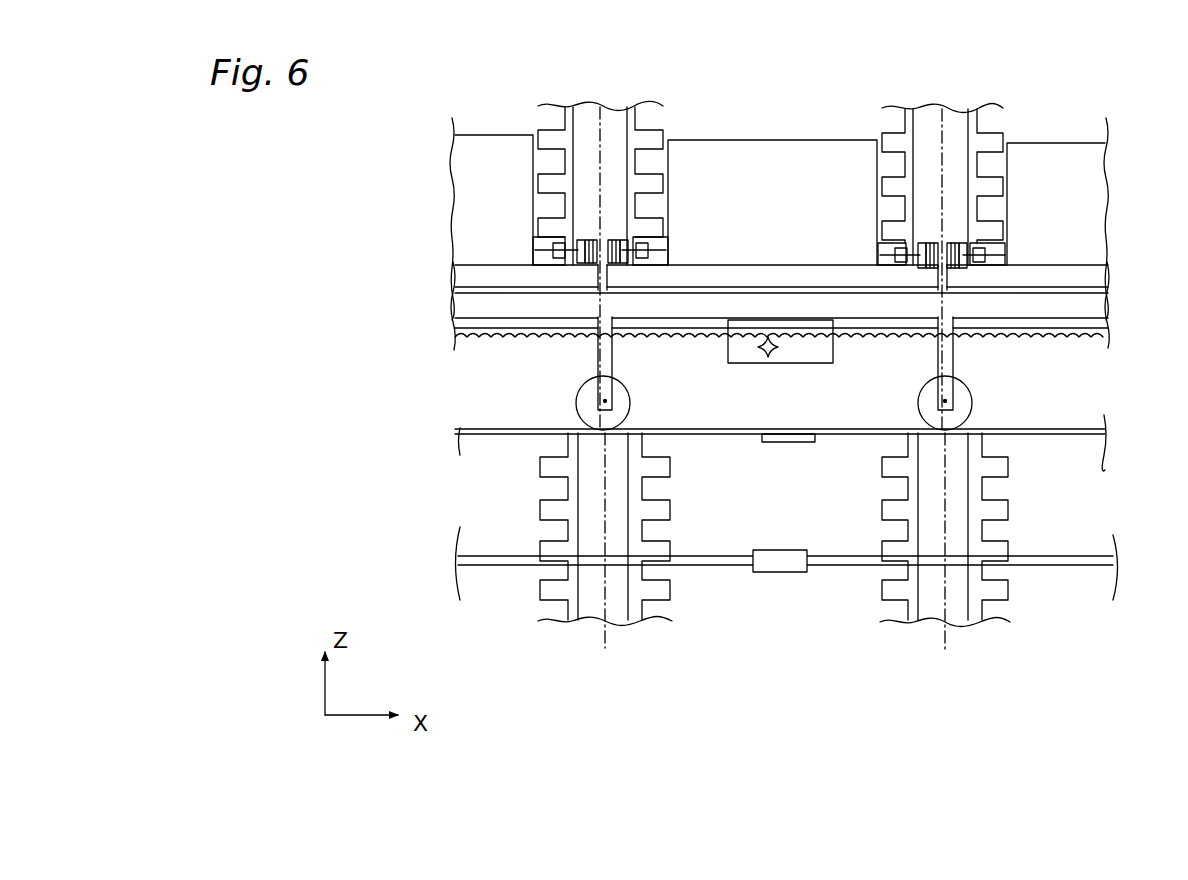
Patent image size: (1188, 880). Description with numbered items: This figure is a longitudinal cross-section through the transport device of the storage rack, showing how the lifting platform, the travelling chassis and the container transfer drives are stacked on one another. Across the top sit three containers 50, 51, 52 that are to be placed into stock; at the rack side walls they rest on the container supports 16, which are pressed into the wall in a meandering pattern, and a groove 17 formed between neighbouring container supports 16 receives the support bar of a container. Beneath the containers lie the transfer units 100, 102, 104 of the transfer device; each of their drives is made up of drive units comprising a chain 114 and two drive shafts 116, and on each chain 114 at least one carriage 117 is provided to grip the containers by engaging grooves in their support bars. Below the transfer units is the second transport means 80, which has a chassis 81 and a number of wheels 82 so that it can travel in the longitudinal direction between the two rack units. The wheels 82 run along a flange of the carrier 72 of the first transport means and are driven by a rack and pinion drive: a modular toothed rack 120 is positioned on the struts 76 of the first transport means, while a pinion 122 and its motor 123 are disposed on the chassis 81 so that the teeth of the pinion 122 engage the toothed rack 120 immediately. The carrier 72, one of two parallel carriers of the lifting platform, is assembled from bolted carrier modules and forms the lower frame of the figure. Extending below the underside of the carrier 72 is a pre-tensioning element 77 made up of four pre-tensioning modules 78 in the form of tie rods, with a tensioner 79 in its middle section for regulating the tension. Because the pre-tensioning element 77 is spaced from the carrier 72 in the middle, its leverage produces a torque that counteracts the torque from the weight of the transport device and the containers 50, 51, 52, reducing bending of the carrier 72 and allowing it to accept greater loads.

The container support 16 is at (774, 376).
The groove 17 is at (653, 493).
The container 50 is at (491, 219).
The container 51 is at (772, 202).
The container 52 is at (1057, 219).
The carrier 72 is at (1068, 439).
The strut 76 is at (781, 444).
The pre-tensioning element 77 is at (792, 585).
The pre-tensioning module 78 is at (497, 555).
The tensioner 79 is at (767, 572).
The second transport means 80 is at (459, 308).
The chassis 81 is at (1108, 318).
The wheel 82 is at (624, 396).
The transfer unit 100 is at (459, 278).
The transfer unit 102 is at (746, 277).
The transfer unit 104 is at (1108, 283).
The chain 114 is at (596, 240).
The drive shaft 116 is at (615, 240).
The carriage 117 is at (553, 251).
The toothed rack 120 is at (494, 344).
The pinion 122 is at (770, 353).
The motor 123 is at (830, 356).